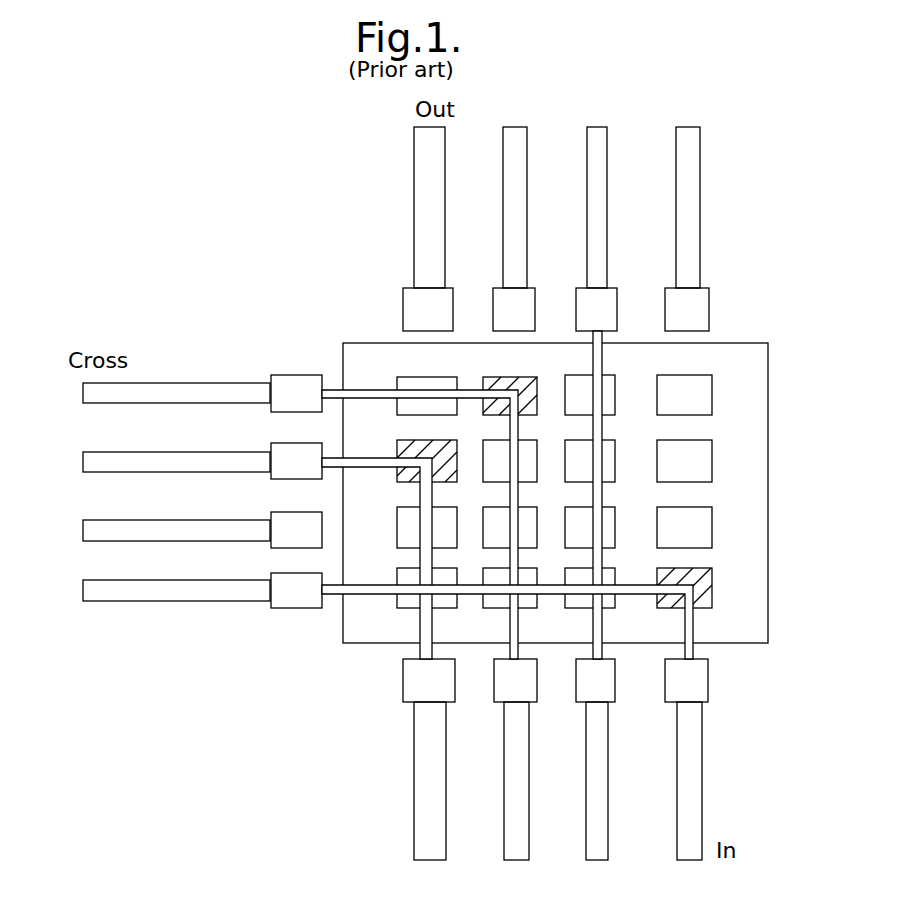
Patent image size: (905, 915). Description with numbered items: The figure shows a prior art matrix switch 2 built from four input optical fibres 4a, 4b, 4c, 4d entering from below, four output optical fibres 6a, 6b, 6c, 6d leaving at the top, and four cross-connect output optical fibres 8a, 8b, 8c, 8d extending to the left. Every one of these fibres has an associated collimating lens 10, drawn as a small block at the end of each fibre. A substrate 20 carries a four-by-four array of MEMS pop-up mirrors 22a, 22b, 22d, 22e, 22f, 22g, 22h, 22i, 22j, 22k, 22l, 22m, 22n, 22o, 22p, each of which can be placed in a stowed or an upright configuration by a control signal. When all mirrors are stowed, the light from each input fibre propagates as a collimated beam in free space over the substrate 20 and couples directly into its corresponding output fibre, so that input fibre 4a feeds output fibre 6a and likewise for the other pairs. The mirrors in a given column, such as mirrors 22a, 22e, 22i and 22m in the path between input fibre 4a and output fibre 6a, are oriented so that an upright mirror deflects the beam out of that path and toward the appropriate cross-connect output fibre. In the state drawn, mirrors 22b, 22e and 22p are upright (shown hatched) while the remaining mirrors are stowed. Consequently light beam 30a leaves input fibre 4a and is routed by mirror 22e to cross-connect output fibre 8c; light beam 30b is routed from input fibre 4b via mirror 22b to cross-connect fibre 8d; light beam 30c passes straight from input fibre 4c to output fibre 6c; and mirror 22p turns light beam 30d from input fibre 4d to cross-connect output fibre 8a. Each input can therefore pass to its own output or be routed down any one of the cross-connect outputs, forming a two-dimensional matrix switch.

The matrix switch 2 is at (792, 322).
The input optical fibre 4a is at (412, 849).
The input optical fibre 4b is at (502, 849).
The input optical fibre 4c is at (584, 849).
The input optical fibre 4d is at (675, 849).
The output optical fibre 6a is at (412, 200).
The output optical fibre 6b is at (501, 200).
The output optical fibre 6c is at (585, 200).
The output optical fibre 6d is at (674, 200).
The cross-connect output optical fibre 8a is at (80, 590).
The cross-connect output optical fibre 8b is at (80, 531).
The cross-connect output optical fibre 8c is at (80, 462).
The cross-connect output optical fibre 8d is at (80, 393).
The collimating lens 10 is at (416, 323).
The substrate 20 is at (774, 603).
The MEMS pop-up mirror 22a is at (406, 380).
The MEMS pop-up mirror 22b is at (510, 372).
The MEMS pop-up mirror 22d is at (702, 378).
The MEMS pop-up mirror 22e is at (434, 444).
The MEMS pop-up mirror 22f is at (527, 444).
The MEMS pop-up mirror 22g is at (601, 444).
The MEMS pop-up mirror 22h is at (702, 444).
The MEMS pop-up mirror 22i is at (447, 509).
The MEMS pop-up mirror 22j is at (519, 509).
The MEMS pop-up mirror 22k is at (599, 509).
The MEMS pop-up mirror 22l is at (702, 509).
The MEMS pop-up mirror 22m is at (440, 574).
The MEMS pop-up mirror 22n is at (520, 574).
The MEMS pop-up mirror 22o is at (599, 574).
The MEMS pop-up mirror 22p is at (702, 574).
The light beam 30a is at (372, 458).
The light beam 30b is at (366, 380).
The light beam 30c is at (592, 364).
The light beam 30d is at (370, 586).